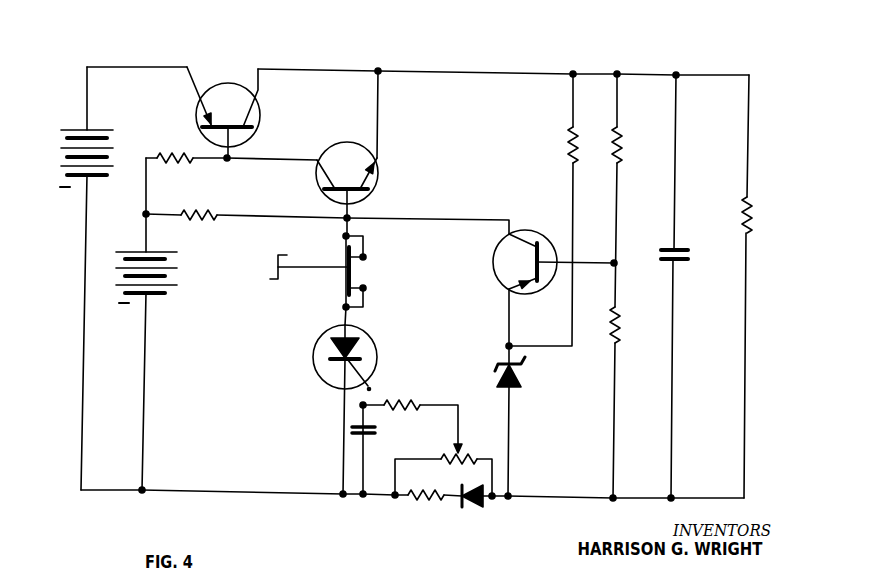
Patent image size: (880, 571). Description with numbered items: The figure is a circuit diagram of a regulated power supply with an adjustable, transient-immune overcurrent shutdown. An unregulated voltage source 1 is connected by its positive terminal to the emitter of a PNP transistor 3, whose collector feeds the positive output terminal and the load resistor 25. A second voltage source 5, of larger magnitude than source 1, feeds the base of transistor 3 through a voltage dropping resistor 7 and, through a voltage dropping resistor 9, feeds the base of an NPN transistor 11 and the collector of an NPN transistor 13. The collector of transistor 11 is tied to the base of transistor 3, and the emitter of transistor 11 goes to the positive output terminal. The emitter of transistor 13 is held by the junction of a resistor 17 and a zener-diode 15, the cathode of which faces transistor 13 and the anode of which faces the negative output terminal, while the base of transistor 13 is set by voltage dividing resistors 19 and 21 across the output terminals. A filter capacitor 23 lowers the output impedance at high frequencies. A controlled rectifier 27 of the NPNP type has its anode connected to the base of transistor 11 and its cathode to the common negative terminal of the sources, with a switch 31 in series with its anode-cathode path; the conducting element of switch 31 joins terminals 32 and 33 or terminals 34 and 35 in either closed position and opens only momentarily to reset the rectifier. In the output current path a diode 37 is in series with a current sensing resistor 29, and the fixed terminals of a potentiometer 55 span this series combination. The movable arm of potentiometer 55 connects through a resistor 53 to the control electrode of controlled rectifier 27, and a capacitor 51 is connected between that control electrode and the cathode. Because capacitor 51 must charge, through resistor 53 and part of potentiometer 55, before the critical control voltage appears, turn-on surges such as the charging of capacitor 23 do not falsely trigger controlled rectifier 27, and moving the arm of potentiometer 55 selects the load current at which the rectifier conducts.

The unregulated voltage source 1 is at (91, 129).
The PNP transistor 3 is at (224, 94).
The voltage source 5 is at (146, 352).
The voltage dropping resistor 7 is at (171, 153).
The voltage dropping resistor 9 is at (200, 212).
The NPN transistor 11 is at (337, 150).
The NPN transistor 13 is at (521, 235).
The zener-diode 15 is at (517, 380).
The resistor 17 is at (567, 151).
The voltage dividing resistor 19 is at (624, 147).
The voltage dividing resistor 21 is at (620, 326).
The filter capacitor 23 is at (677, 249).
The load resistor 25 is at (752, 201).
The controlled rectifier 27 is at (364, 350).
The current sensing resistor 29 is at (421, 499).
The switch 31 is at (294, 262).
The terminal 32 is at (345, 253).
The terminal 33 is at (344, 289).
The terminal 34 is at (365, 257).
The terminal 35 is at (365, 288).
The diode 37 is at (472, 505).
The capacitor 51 is at (378, 430).
The resistor 53 is at (396, 404).
The potentiometer 55 is at (457, 457).